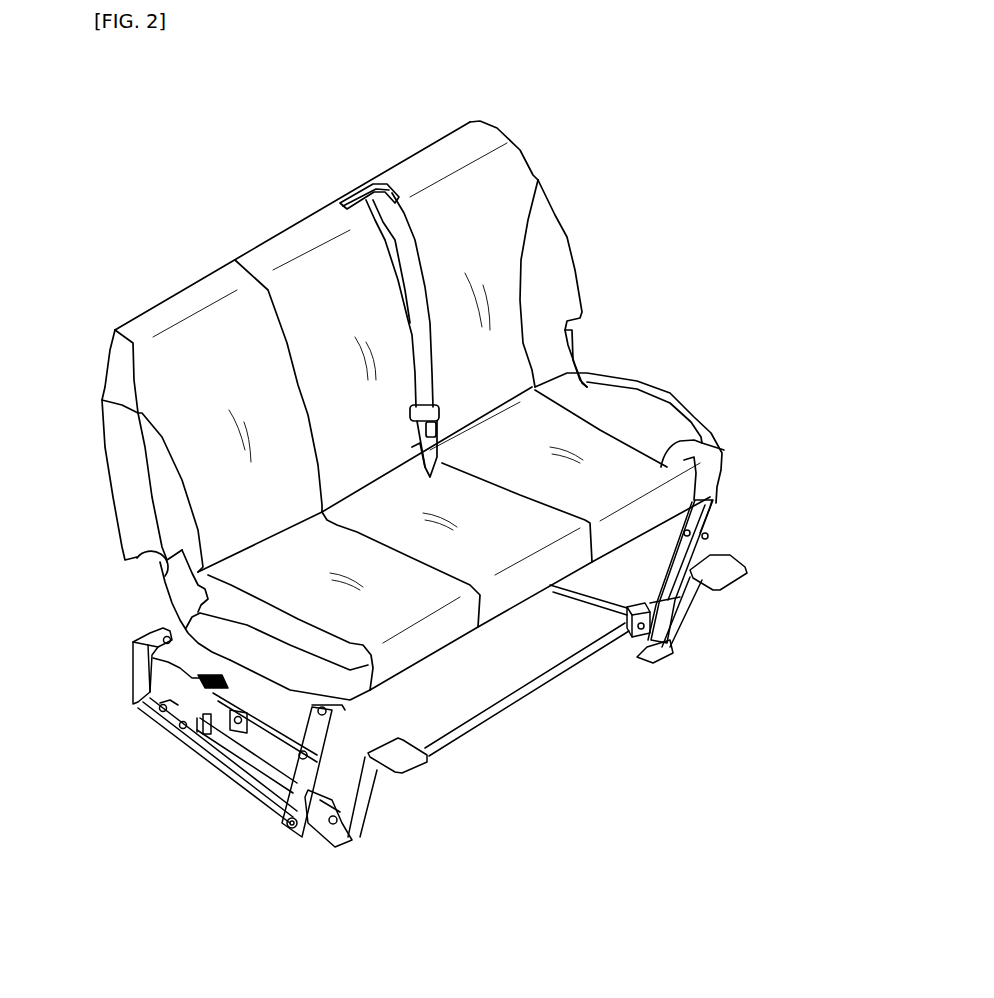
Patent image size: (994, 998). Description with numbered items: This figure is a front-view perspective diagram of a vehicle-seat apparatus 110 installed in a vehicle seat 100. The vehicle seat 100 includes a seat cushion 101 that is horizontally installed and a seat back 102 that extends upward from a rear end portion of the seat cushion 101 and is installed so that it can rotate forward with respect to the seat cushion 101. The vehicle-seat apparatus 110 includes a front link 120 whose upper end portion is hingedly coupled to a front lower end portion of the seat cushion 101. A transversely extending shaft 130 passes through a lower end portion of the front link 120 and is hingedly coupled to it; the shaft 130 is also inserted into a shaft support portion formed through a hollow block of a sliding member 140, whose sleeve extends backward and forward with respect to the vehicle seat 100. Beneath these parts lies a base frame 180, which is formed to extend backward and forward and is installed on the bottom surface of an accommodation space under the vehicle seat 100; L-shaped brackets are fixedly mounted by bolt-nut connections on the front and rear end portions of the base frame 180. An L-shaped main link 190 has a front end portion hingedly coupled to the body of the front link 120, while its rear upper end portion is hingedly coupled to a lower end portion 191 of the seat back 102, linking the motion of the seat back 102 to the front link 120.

The vehicle seat 100 is at (170, 125).
The seat cushion 101 is at (657, 468).
The seat back 102 is at (533, 270).
The vehicle-seat apparatus 110 is at (432, 673).
The front link 120 is at (708, 547).
The shaft 130 is at (567, 673).
The sliding member 140 is at (337, 803).
The base frame 180 is at (237, 783).
The main link 190 is at (253, 740).
The lower end portion of the seat back 191 is at (130, 650).